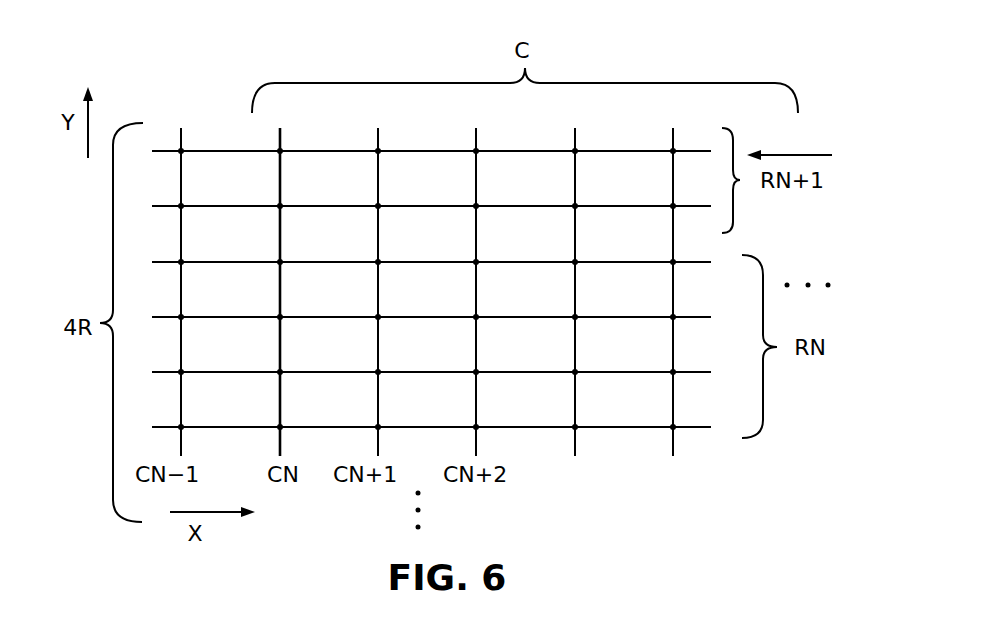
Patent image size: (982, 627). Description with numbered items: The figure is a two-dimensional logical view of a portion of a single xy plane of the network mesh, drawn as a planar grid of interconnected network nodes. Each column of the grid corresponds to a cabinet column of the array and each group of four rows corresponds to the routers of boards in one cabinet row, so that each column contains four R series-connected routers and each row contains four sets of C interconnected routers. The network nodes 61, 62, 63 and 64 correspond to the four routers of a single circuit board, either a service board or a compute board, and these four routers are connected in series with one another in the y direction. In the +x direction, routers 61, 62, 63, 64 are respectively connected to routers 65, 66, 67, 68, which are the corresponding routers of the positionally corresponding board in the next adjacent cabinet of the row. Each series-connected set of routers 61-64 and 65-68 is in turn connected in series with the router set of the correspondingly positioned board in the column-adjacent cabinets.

The network node 61 is at (280, 427).
The network node 62 is at (280, 372).
The network node 63 is at (280, 317).
The network node 64 is at (280, 262).
The router 65 is at (378, 427).
The router 66 is at (378, 372).
The router 67 is at (378, 317).
The router 68 is at (378, 262).